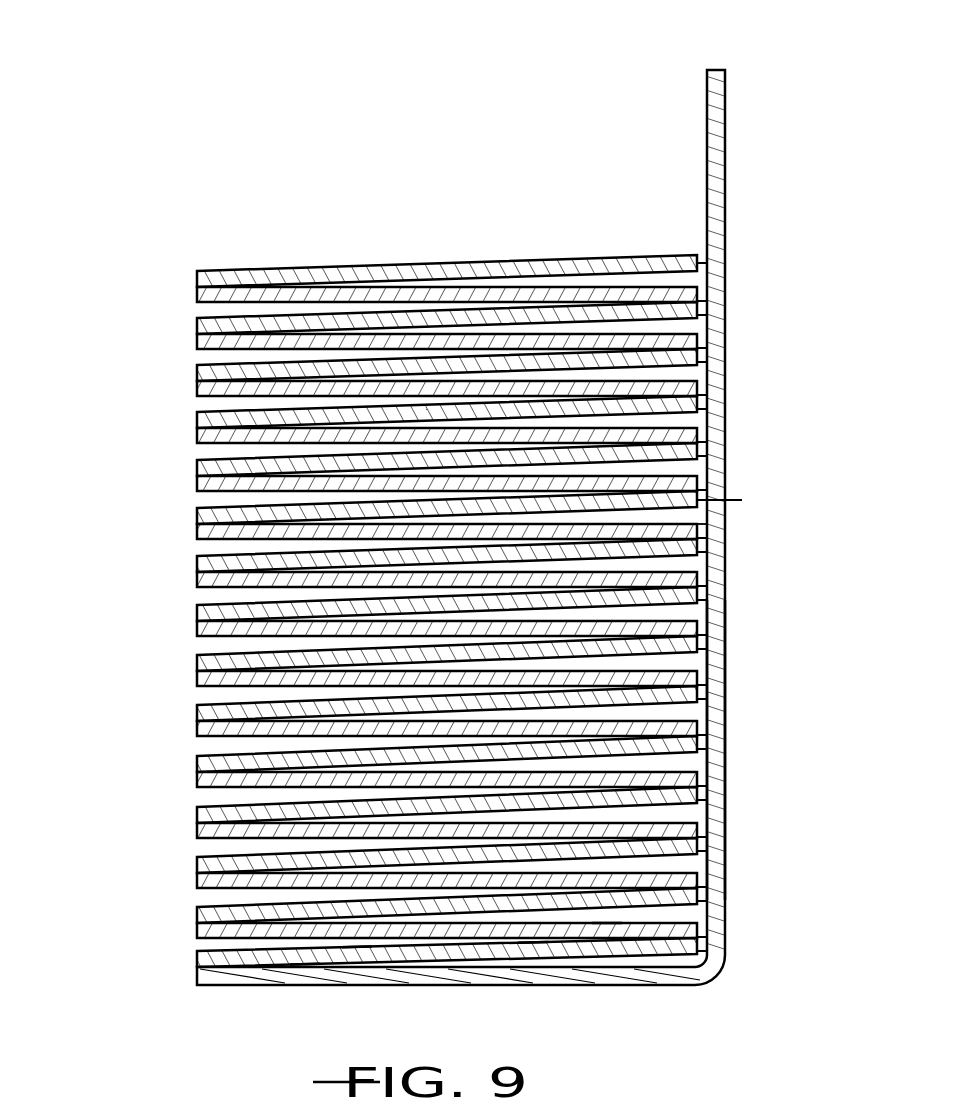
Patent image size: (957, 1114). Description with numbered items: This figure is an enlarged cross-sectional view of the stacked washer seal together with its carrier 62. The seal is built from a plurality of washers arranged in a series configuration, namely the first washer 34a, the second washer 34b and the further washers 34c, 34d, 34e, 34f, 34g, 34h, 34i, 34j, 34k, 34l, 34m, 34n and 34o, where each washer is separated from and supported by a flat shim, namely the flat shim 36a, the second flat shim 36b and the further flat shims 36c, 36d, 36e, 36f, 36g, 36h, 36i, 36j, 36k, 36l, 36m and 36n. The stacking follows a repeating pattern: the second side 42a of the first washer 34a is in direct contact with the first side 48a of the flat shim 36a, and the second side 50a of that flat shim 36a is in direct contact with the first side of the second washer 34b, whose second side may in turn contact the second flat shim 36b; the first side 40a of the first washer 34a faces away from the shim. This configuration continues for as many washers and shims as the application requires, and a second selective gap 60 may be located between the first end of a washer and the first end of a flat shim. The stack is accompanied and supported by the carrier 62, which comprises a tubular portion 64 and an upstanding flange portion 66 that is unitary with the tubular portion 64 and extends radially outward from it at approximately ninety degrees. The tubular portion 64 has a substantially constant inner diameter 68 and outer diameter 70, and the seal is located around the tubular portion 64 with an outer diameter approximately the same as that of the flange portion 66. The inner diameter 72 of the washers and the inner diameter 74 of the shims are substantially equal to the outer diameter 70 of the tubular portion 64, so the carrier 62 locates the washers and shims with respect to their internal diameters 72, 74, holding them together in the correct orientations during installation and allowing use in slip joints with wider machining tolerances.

The first washer 34a is at (197, 960).
The second washer 34b is at (197, 913).
The washer 34c is at (197, 868).
The washer 34d is at (197, 815).
The washer 34e is at (197, 765).
The washer 34f is at (197, 713).
The washer 34g is at (197, 664).
The washer 34h is at (197, 613).
The washer 34i is at (197, 563).
The washer 34j is at (197, 521).
The washer 34k is at (699, 452).
The washer 34l is at (699, 404).
The washer 34m is at (699, 356).
The washer 34n is at (699, 309).
The washer 34o is at (698, 262).
The flat shim 36a is at (197, 933).
The second flat shim 36b is at (197, 883).
The flat shim 36c is at (197, 830).
The flat shim 36d is at (197, 778).
The flat shim 36e is at (197, 728).
The flat shim 36f is at (197, 686).
The flat shim 36g is at (197, 630).
The flat shim 36h is at (197, 580).
The flat shim 36i is at (197, 535).
The flat shim 36j is at (197, 483).
The flat shim 36k is at (699, 437).
The flat shim 36l is at (699, 389).
The flat shim 36m is at (699, 341).
The flat shim 36n is at (699, 293).
The first side of first washer 40a is at (305, 966).
The second side of first washer 42a is at (357, 948).
The first side of flat shim 48a is at (533, 942).
The second side of flat shim 50a is at (607, 923).
The second selective gap 60 is at (197, 447).
The carrier 62 is at (716, 69).
The tubular portion 64 is at (722, 800).
The flange portion 66 is at (513, 985).
The inner diameter 68 is at (731, 748).
The outer diameter 70 is at (718, 727).
The inner diameter of the washers 72 is at (734, 500).
The inner diameter of the shims 74 is at (703, 531).